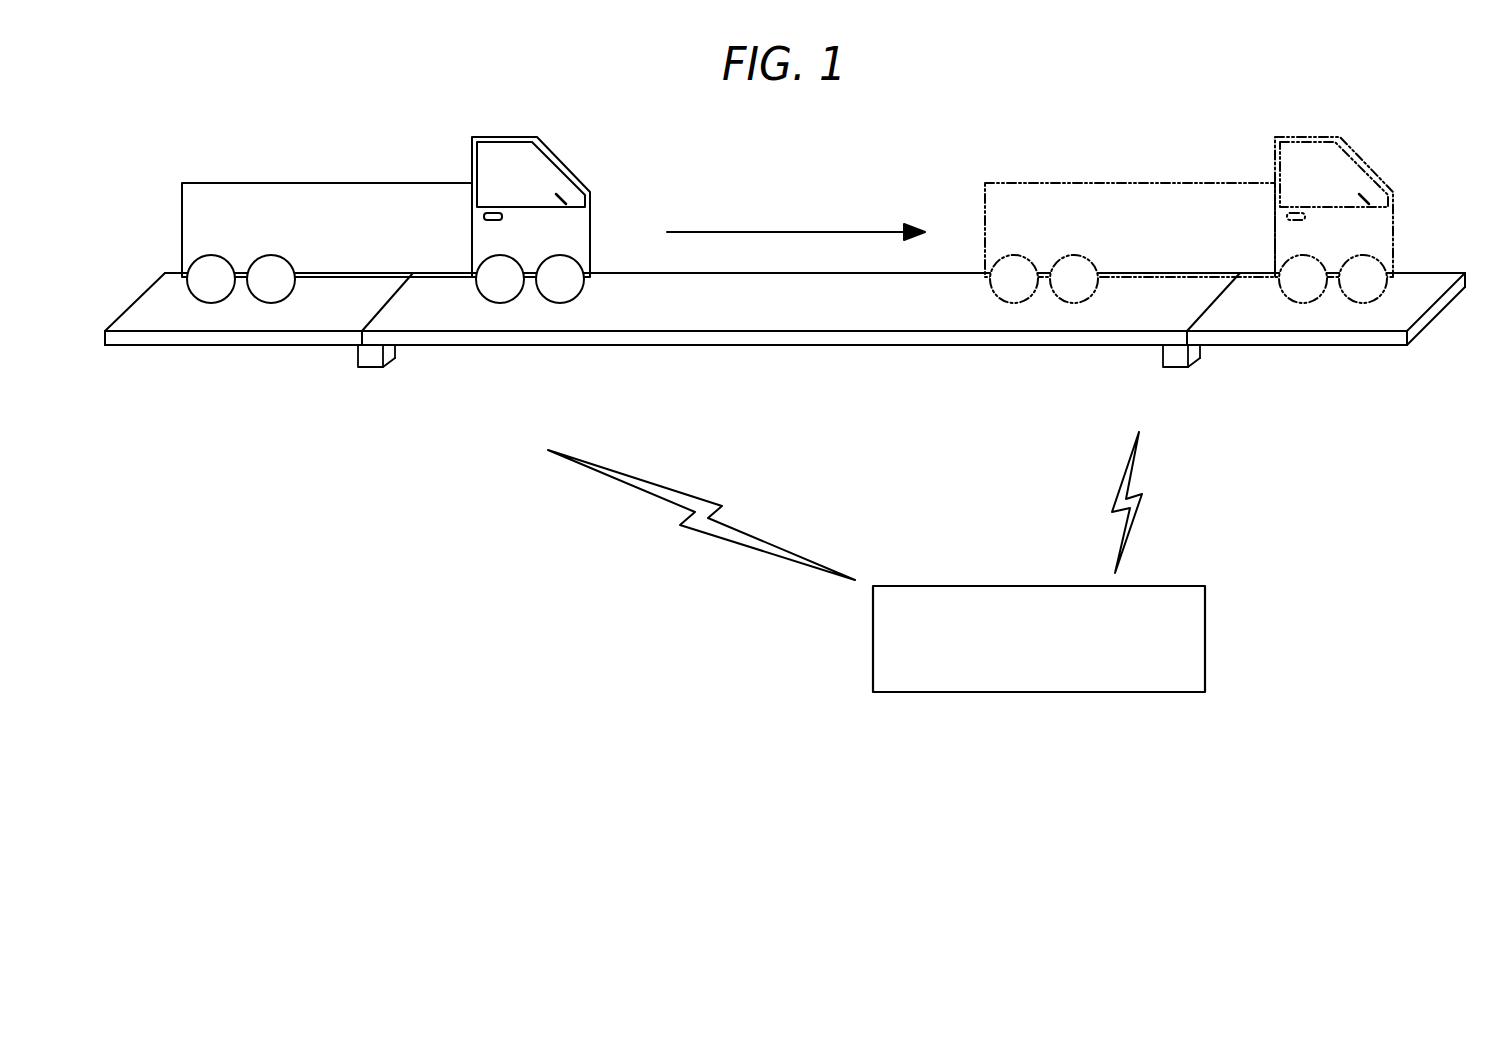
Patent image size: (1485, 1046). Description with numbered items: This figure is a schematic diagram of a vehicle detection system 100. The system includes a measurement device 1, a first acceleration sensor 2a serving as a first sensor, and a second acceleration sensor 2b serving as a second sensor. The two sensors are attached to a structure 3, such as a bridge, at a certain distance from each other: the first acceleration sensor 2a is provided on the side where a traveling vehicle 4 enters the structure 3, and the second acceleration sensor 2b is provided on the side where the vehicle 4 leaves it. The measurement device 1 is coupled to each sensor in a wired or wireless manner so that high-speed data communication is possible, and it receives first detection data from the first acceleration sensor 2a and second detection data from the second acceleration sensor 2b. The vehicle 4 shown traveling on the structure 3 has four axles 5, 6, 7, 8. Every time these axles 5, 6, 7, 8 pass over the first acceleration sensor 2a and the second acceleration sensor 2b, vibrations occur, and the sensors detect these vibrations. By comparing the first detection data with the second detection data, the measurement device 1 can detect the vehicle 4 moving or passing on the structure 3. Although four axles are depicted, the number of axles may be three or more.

The measurement device 1 is at (1175, 585).
The first acceleration sensor 2a is at (373, 360).
The second acceleration sensor 2b is at (1176, 360).
The structure 3 is at (775, 337).
The vehicle 4 is at (266, 147).
The axle 5 is at (560, 292).
The axle 6 is at (500, 292).
The axle 7 is at (271, 292).
The axle 8 is at (212, 292).
The vehicle detection system 100 is at (713, 662).